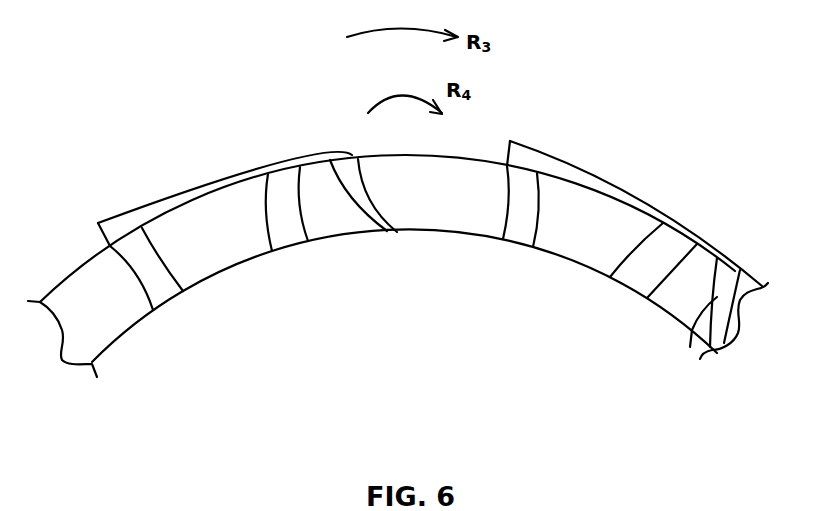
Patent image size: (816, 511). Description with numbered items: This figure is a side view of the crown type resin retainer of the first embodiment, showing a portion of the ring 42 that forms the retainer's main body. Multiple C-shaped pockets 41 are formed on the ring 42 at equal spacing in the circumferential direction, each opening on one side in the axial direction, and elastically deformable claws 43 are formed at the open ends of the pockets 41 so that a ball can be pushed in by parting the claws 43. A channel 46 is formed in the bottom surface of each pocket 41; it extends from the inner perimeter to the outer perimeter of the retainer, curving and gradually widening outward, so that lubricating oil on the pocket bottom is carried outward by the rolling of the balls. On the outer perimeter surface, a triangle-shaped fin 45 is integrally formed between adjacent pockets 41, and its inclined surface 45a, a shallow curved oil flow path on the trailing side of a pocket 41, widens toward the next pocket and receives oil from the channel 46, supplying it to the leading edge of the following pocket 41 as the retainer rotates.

The pocket 41 is at (97, 328).
The ring 42 is at (205, 247).
The claw 43 is at (150, 300).
The fin 45 is at (187, 189).
The inclined surface 45a is at (245, 176).
The channel 46 is at (357, 190).